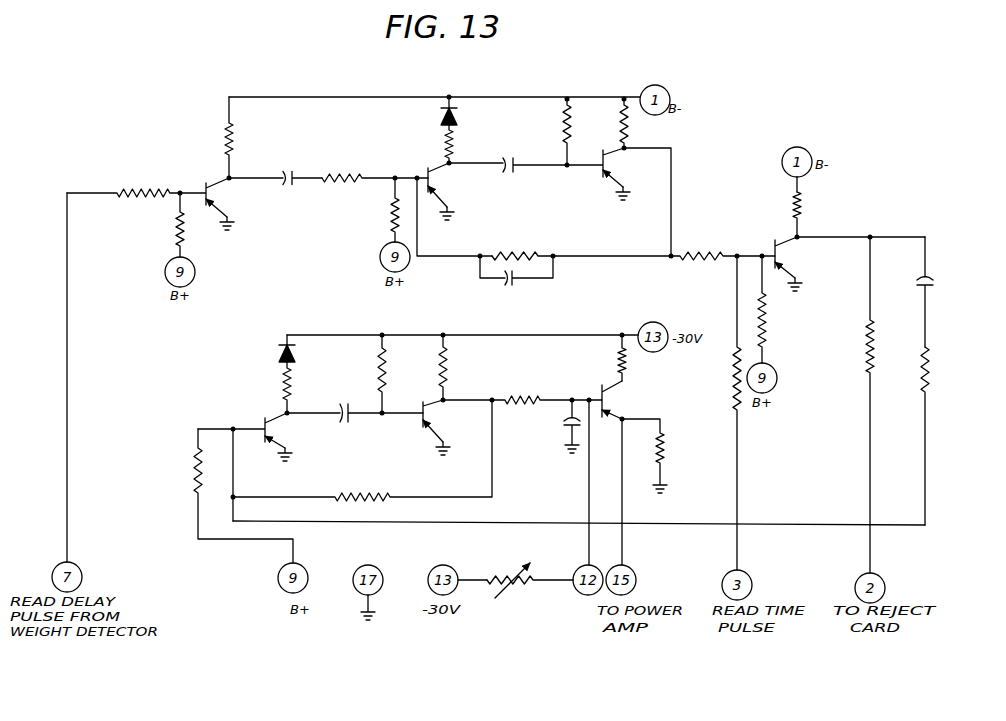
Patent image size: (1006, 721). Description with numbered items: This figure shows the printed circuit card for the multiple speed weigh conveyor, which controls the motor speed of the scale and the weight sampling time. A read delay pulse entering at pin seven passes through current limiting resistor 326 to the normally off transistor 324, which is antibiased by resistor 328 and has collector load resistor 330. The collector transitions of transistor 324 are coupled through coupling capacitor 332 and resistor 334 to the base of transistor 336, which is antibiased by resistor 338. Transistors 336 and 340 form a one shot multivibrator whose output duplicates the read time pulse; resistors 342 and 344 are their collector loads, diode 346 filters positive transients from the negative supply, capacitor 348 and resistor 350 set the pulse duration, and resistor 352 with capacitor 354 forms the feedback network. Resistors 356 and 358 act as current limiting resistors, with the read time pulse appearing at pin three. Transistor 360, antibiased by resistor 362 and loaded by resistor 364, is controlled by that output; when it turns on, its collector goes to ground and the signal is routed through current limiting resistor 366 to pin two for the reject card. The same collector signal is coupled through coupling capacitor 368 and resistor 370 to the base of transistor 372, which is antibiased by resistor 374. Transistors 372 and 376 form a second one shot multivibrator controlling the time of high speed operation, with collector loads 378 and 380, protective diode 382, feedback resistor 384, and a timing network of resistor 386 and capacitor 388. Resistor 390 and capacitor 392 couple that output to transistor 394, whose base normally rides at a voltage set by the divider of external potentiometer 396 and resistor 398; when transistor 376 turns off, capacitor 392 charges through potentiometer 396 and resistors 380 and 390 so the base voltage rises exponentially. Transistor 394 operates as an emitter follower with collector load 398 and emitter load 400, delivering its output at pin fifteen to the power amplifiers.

The transistor 324 is at (226, 212).
The resistor 326 is at (123, 179).
The resistor 328 is at (176, 232).
The resistor 330 is at (223, 139).
The coupling capacitor 332 is at (293, 170).
The resistor 334 is at (344, 172).
The transistor 336 is at (444, 194).
The resistor 338 is at (388, 218).
The transistor 340 is at (606, 180).
The resistor 342 is at (453, 145).
The resistor 344 is at (642, 124).
The diode 346 is at (440, 113).
The capacitor 348 is at (508, 179).
The resistor 350 is at (562, 118).
The resistor 352 is at (510, 254).
The capacitor 354 is at (509, 284).
The resistor 356 is at (698, 256).
The resistor 358 is at (732, 370).
The transistor 360 is at (787, 270).
The resistor 362 is at (769, 332).
The resistor 364 is at (803, 209).
The resistor 366 is at (866, 346).
The coupling capacitor 368 is at (934, 284).
The resistor 370 is at (933, 368).
The transistor 372 is at (274, 446).
The resistor 374 is at (188, 466).
The transistor 376 is at (426, 432).
The resistor 378 is at (282, 380).
The resistor 380 is at (449, 360).
The diode 382 is at (278, 352).
The resistor 384 is at (347, 492).
The resistor 386 is at (388, 368).
The capacitor 388 is at (347, 404).
The resistor 390 is at (512, 396).
The capacitor 392 is at (562, 424).
The transistor 394 is at (612, 414).
The external potentiometer 396 is at (512, 566).
The resistor 398 is at (629, 360).
The resistor 400 is at (667, 452).